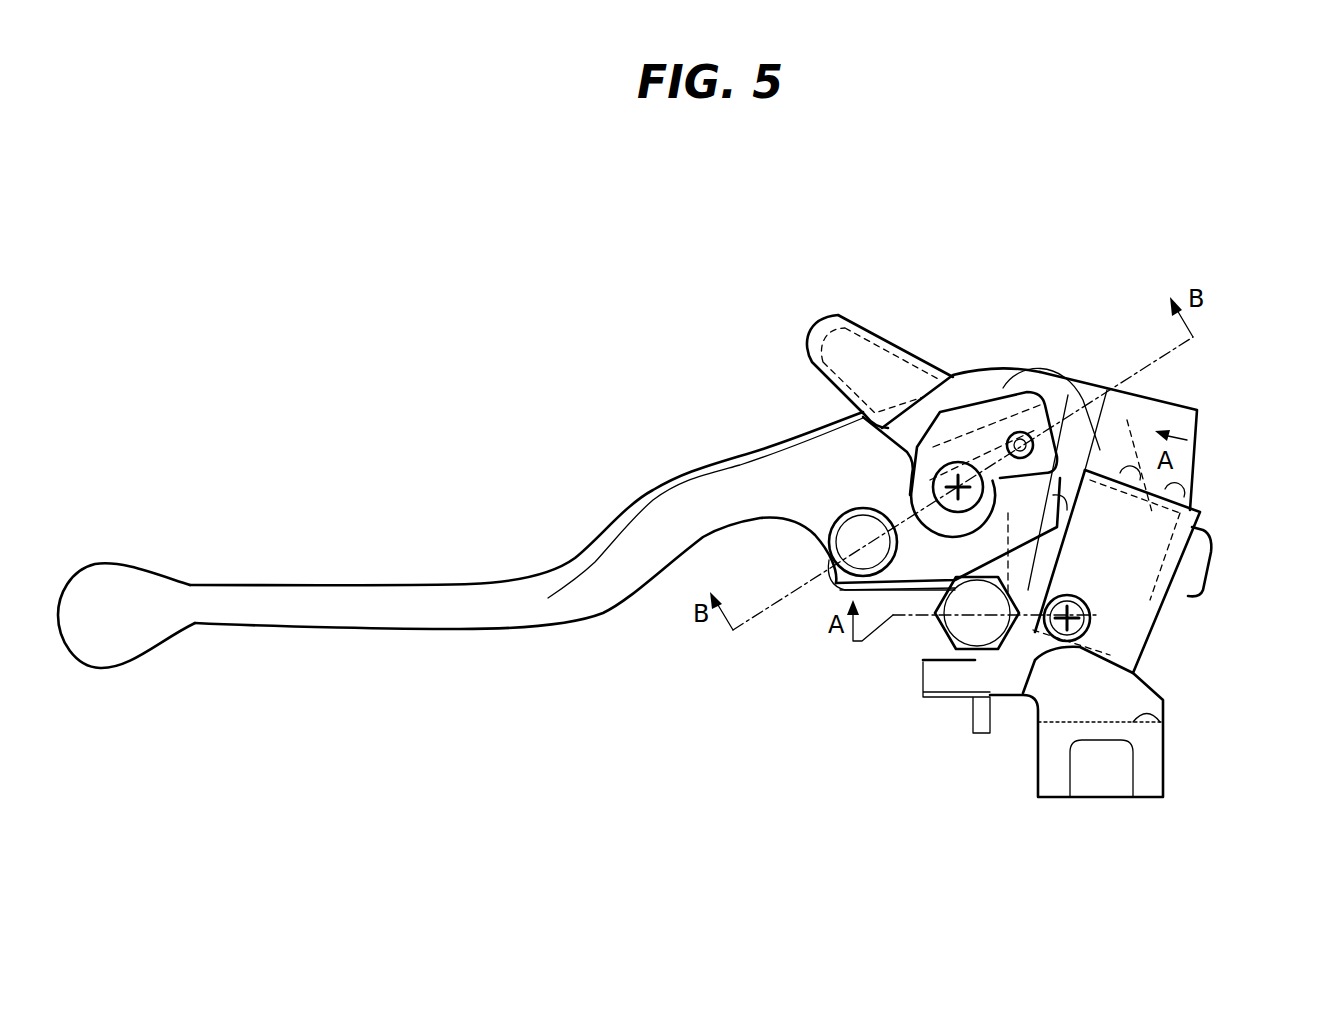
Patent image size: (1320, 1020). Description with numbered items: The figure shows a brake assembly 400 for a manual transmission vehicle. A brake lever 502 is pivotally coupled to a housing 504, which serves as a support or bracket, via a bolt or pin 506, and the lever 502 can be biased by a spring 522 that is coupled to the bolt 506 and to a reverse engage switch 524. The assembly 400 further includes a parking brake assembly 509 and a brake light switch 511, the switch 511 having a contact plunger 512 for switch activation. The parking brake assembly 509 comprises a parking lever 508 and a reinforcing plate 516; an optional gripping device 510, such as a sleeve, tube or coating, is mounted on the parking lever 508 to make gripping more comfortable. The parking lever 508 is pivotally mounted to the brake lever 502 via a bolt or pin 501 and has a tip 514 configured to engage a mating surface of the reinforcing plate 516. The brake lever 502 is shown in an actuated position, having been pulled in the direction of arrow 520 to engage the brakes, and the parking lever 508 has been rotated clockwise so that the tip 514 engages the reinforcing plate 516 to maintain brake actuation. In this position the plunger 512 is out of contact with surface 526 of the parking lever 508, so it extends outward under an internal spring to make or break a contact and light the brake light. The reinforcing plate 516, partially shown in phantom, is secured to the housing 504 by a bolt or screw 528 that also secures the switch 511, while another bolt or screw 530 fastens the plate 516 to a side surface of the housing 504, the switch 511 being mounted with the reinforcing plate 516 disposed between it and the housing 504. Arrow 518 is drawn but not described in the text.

The brake assembly 400 is at (1147, 242).
The bolt or pin 501 is at (937, 470).
The brake lever 502 is at (707, 483).
The housing 504 is at (1160, 700).
The bolt or pin 506 is at (968, 632).
The parking lever 508 is at (978, 435).
The parking brake assembly 509 is at (897, 333).
The gripping device 510 is at (850, 313).
The brake light switch 511 is at (1163, 615).
The contact plunger 512 is at (1054, 518).
The tip 514 is at (1057, 513).
The reinforcing plate 516 is at (1120, 447).
The direction arrow 518 is at (802, 350).
The arrow 520 is at (378, 660).
The spring 522 is at (917, 595).
The reverse engage switch 524 is at (847, 570).
The surface 526 is at (937, 548).
The bolt or screw 528 is at (1020, 680).
The bolt or screw 530 is at (1210, 557).